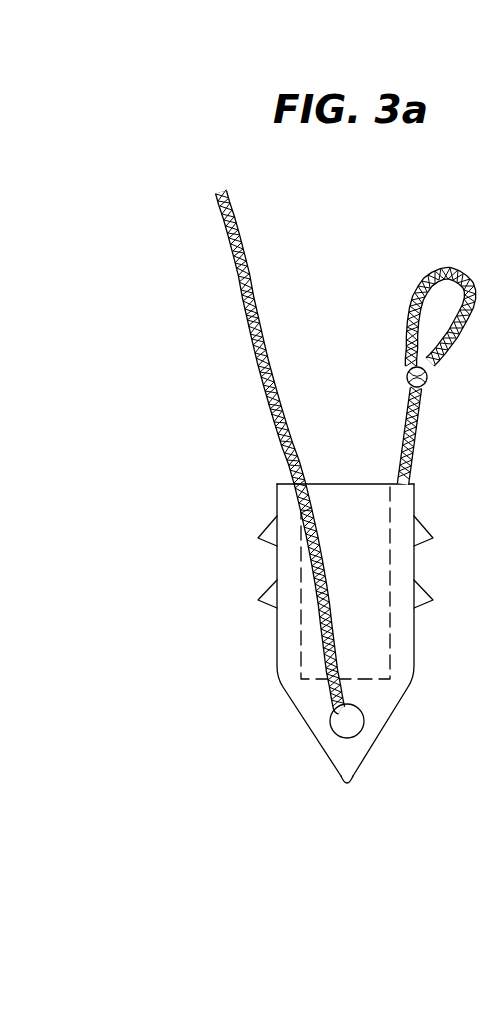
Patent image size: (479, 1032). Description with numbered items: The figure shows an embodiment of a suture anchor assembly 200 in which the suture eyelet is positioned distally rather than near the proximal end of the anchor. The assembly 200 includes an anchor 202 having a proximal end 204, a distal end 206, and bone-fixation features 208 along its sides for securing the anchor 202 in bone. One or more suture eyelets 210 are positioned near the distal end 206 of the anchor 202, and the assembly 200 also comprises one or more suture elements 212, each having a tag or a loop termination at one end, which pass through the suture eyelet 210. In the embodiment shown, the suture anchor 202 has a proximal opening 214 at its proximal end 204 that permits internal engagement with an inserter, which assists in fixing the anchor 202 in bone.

The suture anchor assembly 200 is at (351, 284).
The anchor 202 is at (254, 652).
The proximal end 204 is at (274, 480).
The distal end 206 is at (325, 786).
The bone-fixation features 208 is at (262, 541).
The suture eyelet 210 is at (330, 725).
The suture element 212 is at (240, 320).
The proximal opening 214 is at (342, 480).